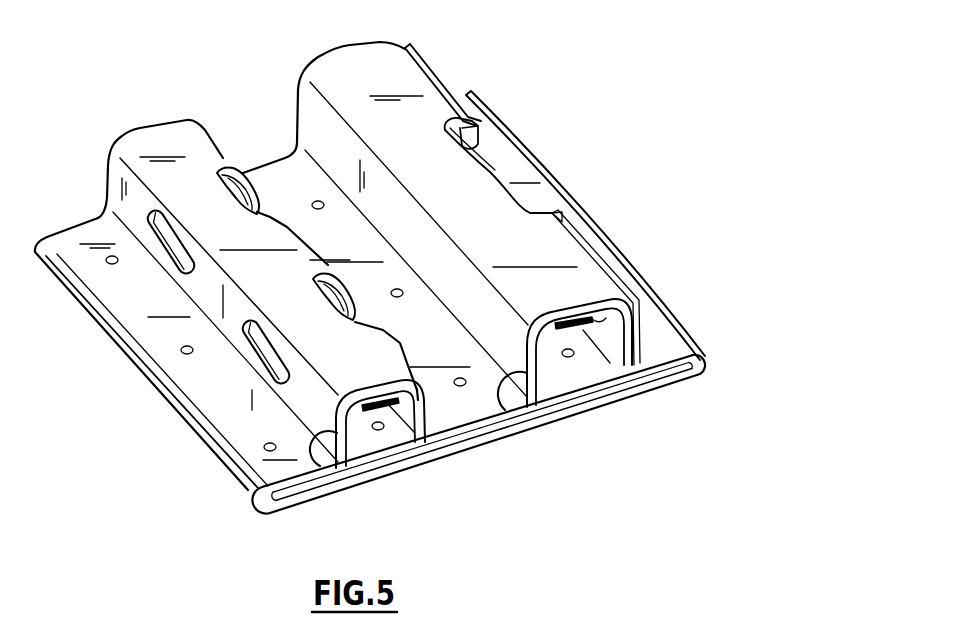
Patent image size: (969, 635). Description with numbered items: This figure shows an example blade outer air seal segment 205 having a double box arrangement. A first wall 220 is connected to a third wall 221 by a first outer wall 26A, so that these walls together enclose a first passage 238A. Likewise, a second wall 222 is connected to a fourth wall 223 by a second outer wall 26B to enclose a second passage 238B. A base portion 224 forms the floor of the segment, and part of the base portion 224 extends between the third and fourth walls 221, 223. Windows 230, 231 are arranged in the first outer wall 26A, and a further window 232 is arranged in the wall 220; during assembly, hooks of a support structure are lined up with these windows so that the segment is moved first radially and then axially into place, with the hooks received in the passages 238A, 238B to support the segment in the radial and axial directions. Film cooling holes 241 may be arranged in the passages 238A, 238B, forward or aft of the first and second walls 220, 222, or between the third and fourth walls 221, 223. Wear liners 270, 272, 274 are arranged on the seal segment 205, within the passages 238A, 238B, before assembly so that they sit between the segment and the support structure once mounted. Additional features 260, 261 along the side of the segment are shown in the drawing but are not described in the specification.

The BOAS segment 205 is at (566, 77).
The first rail section 26A is at (163, 147).
The second rail section 26B is at (358, 65).
The first wall 220 is at (336, 436).
The third wall 221 is at (460, 386).
The second wall 222 is at (632, 340).
The fourth wall 223 is at (525, 428).
The base portion 224 is at (432, 457).
The window 230 is at (350, 327).
The window 231 is at (231, 168).
The window 232 is at (493, 178).
The first passage 238A is at (378, 440).
The second passage 238B is at (590, 363).
The film cooling holes 241 is at (505, 430).
The second slot 260 is at (262, 345).
The first slot 261 is at (180, 254).
The wear liner 270 is at (600, 245).
The wear liner 272 is at (620, 310).
The wear liner 274 is at (410, 400).